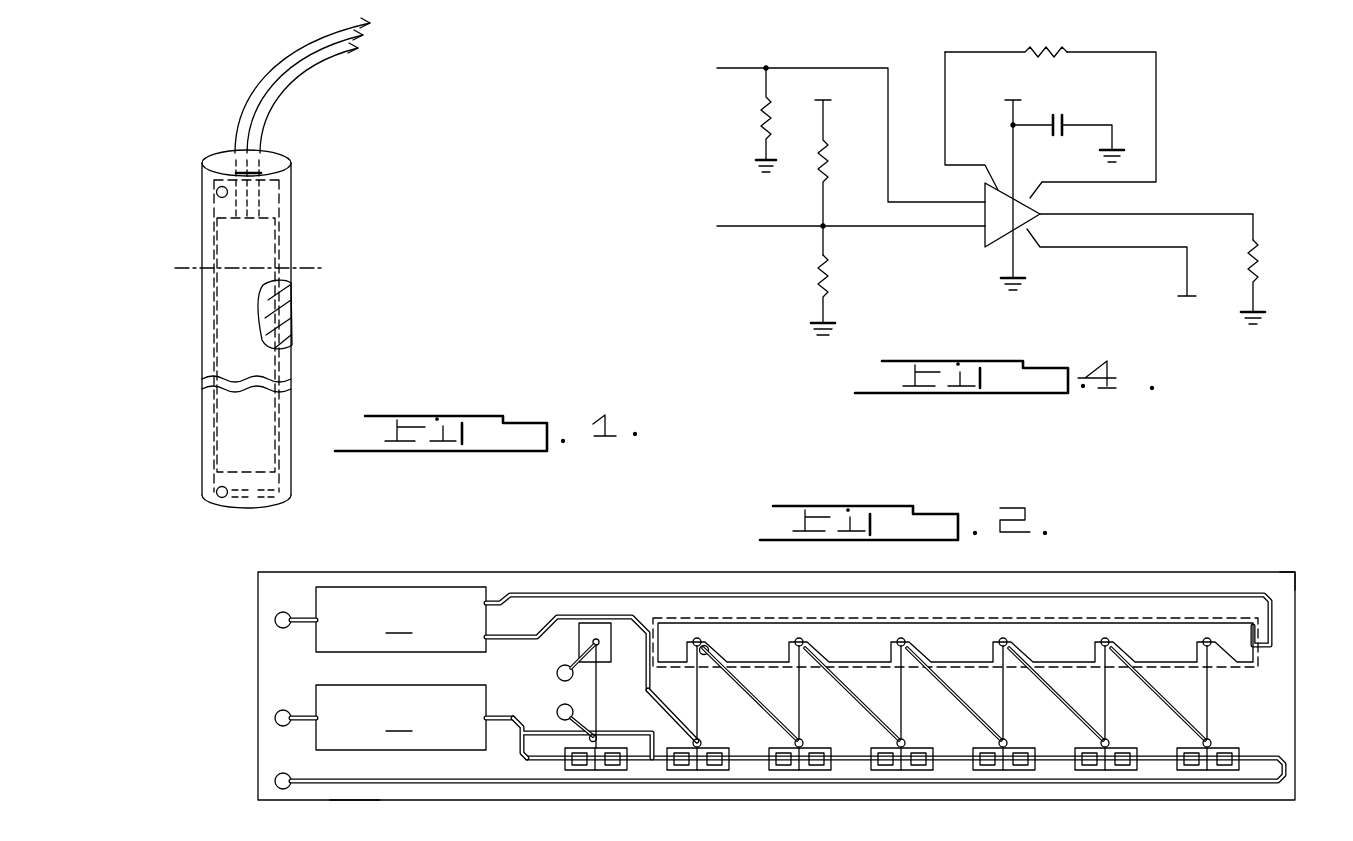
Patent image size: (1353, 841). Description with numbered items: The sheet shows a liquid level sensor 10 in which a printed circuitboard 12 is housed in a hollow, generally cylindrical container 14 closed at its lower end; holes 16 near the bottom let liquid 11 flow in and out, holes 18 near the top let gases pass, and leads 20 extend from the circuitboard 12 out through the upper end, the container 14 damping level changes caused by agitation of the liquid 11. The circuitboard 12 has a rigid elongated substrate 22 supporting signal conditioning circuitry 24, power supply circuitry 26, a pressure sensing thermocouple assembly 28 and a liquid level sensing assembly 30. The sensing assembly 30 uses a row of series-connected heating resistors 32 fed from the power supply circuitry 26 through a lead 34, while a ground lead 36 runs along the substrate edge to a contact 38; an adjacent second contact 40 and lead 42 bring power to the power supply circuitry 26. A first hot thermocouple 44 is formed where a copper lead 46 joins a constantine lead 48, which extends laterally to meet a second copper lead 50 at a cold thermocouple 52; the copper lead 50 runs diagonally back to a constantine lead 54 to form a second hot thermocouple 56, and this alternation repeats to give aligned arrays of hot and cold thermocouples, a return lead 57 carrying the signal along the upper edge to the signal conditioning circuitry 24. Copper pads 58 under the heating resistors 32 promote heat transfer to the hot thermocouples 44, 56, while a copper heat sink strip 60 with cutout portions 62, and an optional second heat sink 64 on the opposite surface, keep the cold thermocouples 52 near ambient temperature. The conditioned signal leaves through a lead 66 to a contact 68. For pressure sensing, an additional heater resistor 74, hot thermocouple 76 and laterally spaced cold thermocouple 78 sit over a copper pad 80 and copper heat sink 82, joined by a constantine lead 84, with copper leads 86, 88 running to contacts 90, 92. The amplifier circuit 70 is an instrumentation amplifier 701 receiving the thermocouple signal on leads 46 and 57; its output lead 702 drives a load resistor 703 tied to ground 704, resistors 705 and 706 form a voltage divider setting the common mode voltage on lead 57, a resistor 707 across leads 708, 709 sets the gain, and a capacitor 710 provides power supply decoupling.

In FIG. 1, the liquid level sensor 10 is at (302, 288).
In FIG. 1, the liquid 11 is at (303, 268).
In FIG. 1, the printed circuitboard 12 is at (270, 303).
In FIG. 2, the printed circuitboard 12 is at (1190, 552).
In FIG. 1, the container 14 is at (291, 362).
In FIG. 1, the holes 16 is at (222, 498).
In FIG. 1, the holes 18 is at (218, 190).
In FIG. 1, the leads 20 is at (300, 43).
In FIG. 2, the substrate 22 is at (1288, 578).
In FIG. 2, the signal conditioning circuitry 24 is at (401, 619).
In FIG. 2, the power supply circuitry 26 is at (401, 717).
In FIG. 2, the pressure sensing thermocouple assembly 28 is at (541, 739).
In FIG. 2, the liquid level sensing assembly 30 is at (1009, 693).
In FIG. 2, the heating resistors 32 is at (683, 770).
In FIG. 2, the lead 34 is at (496, 716).
In FIG. 2, the ground lead 36 is at (356, 793).
In FIG. 2, the contact 38 is at (275, 782).
In FIG. 2, the second contact 40 is at (275, 718).
In FIG. 2, the lead 42 is at (300, 725).
In FIG. 2, the first hot thermocouple 44 is at (707, 750).
In FIG. 4, the copper lead 46 is at (724, 68).
In FIG. 2, the copper lead 46 is at (665, 720).
In FIG. 2, the constantine lead 48 is at (698, 688).
In FIG. 2, the second copper lead 50 is at (762, 720).
In FIG. 2, the cold thermocouple 52 is at (697, 638).
In FIG. 2, the constantine lead 54 is at (800, 730).
In FIG. 2, the second hot thermocouple 56 is at (813, 752).
In FIG. 4, the return lead 57 is at (722, 226).
In FIG. 2, the return lead 57 is at (1068, 597).
In FIG. 2, the copper pad 58 is at (672, 772).
In FIG. 2, the copper heat sink strip 60 is at (755, 640).
In FIG. 2, the cutout portions 62 is at (709, 652).
In FIG. 2, the copper heat sink 64 is at (963, 620).
In FIG. 2, the lead 66 is at (304, 617).
In FIG. 2, the contact 68 is at (275, 620).
In FIG. 4, the amplifier circuit 70 is at (991, 178).
In FIG. 2, the heater resistor 74 is at (586, 772).
In FIG. 2, the hot thermocouple 76 is at (600, 748).
In FIG. 2, the cold thermocouple 78 is at (596, 639).
In FIG. 2, the copper pad 80 is at (581, 768).
In FIG. 2, the copper heat sink 82 is at (605, 626).
In FIG. 2, the constantine lead 84 is at (597, 700).
In FIG. 2, the copper lead 86 is at (574, 764).
In FIG. 2, the copper lead 88 is at (565, 665).
In FIG. 2, the contact 90 is at (557, 710).
In FIG. 2, the contact 92 is at (557, 673).
In FIG. 4, the instrumentation amplifier 701 is at (980, 240).
In FIG. 4, the lead 702 is at (1150, 214).
In FIG. 4, the load resistor 703 is at (1257, 252).
In FIG. 4, the ground 704 is at (1247, 316).
In FIG. 4, the resistor 705 is at (823, 150).
In FIG. 4, the resistor 706 is at (817, 285).
In FIG. 4, the resistor 707 is at (1055, 52).
In FIG. 4, the lead 708 is at (1157, 138).
In FIG. 4, the lead 709 is at (945, 108).
In FIG. 4, the capacitor 710 is at (1055, 112).